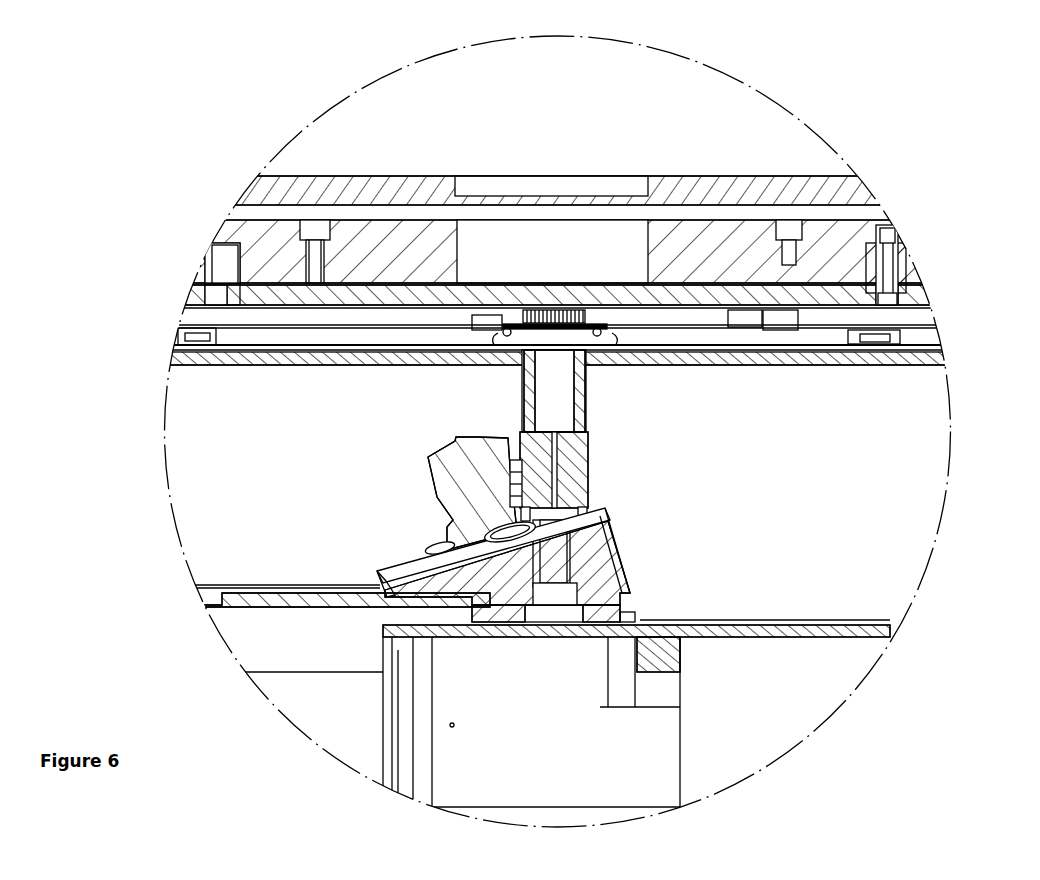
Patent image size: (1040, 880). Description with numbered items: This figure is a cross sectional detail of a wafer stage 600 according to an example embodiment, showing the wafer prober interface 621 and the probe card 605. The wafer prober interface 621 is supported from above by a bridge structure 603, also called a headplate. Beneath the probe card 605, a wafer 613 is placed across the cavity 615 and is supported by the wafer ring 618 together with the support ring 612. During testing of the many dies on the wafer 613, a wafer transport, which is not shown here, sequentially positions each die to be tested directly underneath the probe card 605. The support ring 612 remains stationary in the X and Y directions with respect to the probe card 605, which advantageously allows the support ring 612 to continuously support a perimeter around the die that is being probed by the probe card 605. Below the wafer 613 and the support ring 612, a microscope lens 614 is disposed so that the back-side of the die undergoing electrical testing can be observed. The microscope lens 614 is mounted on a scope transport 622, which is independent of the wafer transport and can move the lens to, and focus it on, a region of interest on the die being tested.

The optical mounting assembly 600 is at (268, 729).
The bridge structure 603 is at (878, 265).
The probe card 605 is at (554, 310).
The support ring 612 is at (600, 328).
The wafer 613 is at (655, 318).
The microscope lens 614 is at (548, 382).
The cavity 615 is at (393, 335).
The wafer ring 618 is at (890, 332).
The wafer prober interface 621 is at (405, 257).
The scope transport 622 is at (563, 700).